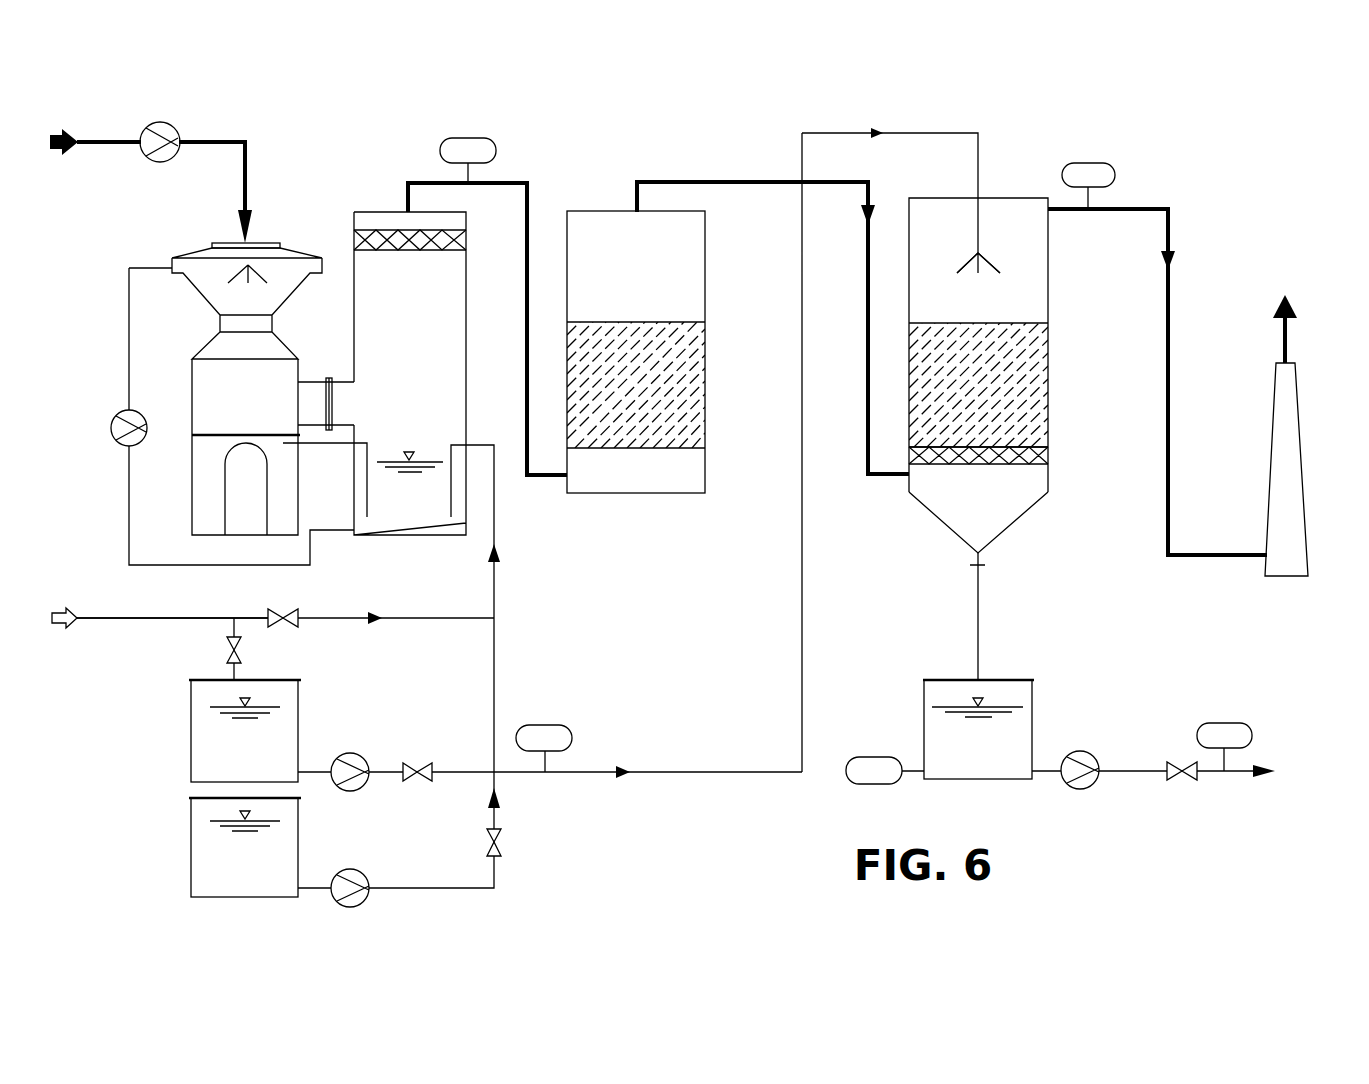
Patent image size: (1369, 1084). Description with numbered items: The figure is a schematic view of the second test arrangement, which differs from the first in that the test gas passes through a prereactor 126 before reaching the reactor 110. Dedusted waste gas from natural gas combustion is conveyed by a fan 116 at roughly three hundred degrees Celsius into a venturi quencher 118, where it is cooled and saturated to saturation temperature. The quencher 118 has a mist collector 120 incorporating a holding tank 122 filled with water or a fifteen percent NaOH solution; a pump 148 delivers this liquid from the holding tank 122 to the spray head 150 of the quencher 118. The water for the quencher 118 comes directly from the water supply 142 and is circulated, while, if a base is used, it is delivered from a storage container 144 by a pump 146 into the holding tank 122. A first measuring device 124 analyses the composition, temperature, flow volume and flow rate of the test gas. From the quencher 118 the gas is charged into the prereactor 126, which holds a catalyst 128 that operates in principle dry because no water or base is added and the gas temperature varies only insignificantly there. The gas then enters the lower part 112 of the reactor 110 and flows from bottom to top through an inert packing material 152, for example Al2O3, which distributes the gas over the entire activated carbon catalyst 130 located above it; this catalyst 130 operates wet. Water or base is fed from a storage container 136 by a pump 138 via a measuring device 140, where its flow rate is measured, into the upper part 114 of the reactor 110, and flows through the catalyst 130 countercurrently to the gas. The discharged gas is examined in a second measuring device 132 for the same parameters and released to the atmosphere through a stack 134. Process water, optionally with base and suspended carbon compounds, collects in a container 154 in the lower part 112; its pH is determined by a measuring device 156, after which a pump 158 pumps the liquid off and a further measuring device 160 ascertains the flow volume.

The test reactor 110 is at (942, 197).
The lower part 112 is at (1037, 493).
The upper part 114 is at (1037, 270).
The fan 116 is at (148, 127).
The venturi quencher 118 is at (190, 527).
The mist collector 120 is at (397, 210).
The holding tank 122 is at (410, 475).
The first measuring device 124 is at (468, 144).
The prereactor 126 is at (598, 210).
The prereactor catalyst 128 is at (695, 393).
The activated carbon catalyst 130 is at (1035, 393).
The second measuring device 132 is at (1088, 171).
The stack 134 is at (1293, 470).
The storage container 136 is at (245, 731).
The pump 138 is at (380, 757).
The measuring device 140 is at (544, 734).
The water supply 142 is at (175, 622).
The storage container 144 is at (245, 847).
The pump 146 is at (416, 868).
The pump 148 is at (101, 428).
The spray head 150 is at (225, 277).
The packing material 152 is at (1047, 455).
The container 154 is at (978, 729).
The measuring device 156 is at (874, 753).
The pump 158 is at (1129, 756).
The measuring device 160 is at (1224, 732).